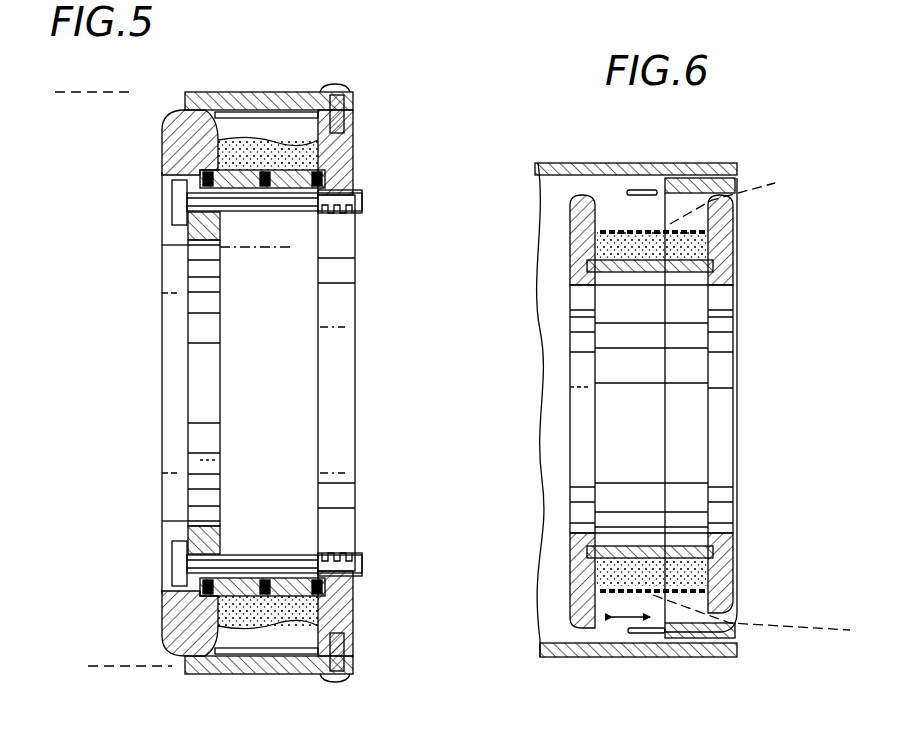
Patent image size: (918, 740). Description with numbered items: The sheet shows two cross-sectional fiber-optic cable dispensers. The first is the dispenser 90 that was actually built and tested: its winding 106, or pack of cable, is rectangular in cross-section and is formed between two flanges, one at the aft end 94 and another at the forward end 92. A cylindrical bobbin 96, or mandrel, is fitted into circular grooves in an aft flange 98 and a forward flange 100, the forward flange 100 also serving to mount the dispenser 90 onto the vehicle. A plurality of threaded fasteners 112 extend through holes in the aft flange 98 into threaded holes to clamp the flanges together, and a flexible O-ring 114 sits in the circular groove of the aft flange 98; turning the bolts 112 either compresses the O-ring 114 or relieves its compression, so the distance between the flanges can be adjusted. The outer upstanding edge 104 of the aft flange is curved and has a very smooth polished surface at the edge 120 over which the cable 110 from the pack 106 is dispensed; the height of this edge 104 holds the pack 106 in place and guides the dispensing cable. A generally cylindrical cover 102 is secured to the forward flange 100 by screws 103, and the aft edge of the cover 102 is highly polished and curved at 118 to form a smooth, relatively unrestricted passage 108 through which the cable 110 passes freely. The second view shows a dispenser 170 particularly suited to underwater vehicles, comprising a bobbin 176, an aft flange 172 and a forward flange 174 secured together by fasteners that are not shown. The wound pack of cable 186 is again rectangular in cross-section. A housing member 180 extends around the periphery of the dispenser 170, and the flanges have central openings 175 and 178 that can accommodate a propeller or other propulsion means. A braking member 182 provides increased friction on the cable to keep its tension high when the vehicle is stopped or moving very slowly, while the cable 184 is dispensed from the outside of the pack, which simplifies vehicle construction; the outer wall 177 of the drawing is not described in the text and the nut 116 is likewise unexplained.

In FIG. 5, the dispenser 90 is at (86, 670).
In FIG. 5, the forward end 92 is at (397, 356).
In FIG. 5, the aft end 94 is at (152, 355).
In FIG. 5, the bobbin 96 is at (305, 150).
In FIG. 5, the aft flange 98 is at (188, 523).
In FIG. 5, the forward flange 100 is at (357, 487).
In FIG. 5, the cover 102 is at (296, 92).
In FIG. 5, the screws 103 is at (352, 90).
In FIG. 5, the upstanding edge of the aft flange 104 is at (177, 131).
In FIG. 5, the winding 106 is at (348, 128).
In FIG. 5, the passage 108 is at (186, 89).
In FIG. 5, the cable 110 is at (183, 97).
In FIG. 5, the threaded fasteners 112 is at (178, 205).
In FIG. 5, the O-ring 114 is at (200, 178).
In FIG. 5, the nut 116 is at (337, 138).
In FIG. 5, the curved aft edge of the cover 118 is at (237, 62).
In FIG. 5, the polished edge 120 is at (202, 92).
In FIG. 6, the dispenser 170 is at (730, 160).
In FIG. 6, the aft flange 172 is at (728, 228).
In FIG. 6, the forward flange 174 is at (577, 232).
In FIG. 6, the central opening 175 is at (580, 375).
In FIG. 6, the bobbin 176 is at (652, 290).
In FIG. 6, the outer wall 177 is at (735, 448).
In FIG. 6, the central opening 178 is at (735, 375).
In FIG. 6, the housing member 180 is at (648, 163).
In FIG. 6, the braking member 182 is at (678, 178).
In FIG. 6, the cable 184 is at (775, 183).
In FIG. 6, the wound pack of cable 186 is at (725, 265).